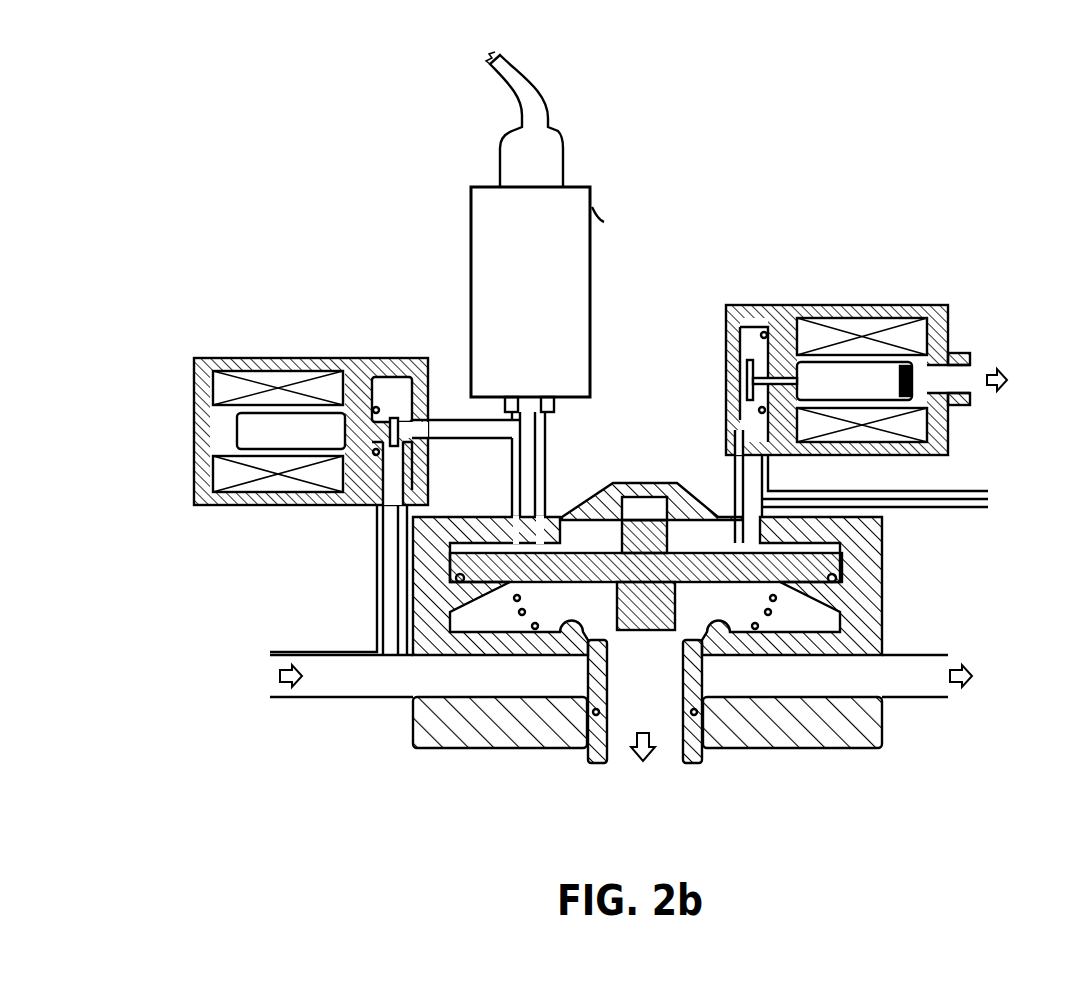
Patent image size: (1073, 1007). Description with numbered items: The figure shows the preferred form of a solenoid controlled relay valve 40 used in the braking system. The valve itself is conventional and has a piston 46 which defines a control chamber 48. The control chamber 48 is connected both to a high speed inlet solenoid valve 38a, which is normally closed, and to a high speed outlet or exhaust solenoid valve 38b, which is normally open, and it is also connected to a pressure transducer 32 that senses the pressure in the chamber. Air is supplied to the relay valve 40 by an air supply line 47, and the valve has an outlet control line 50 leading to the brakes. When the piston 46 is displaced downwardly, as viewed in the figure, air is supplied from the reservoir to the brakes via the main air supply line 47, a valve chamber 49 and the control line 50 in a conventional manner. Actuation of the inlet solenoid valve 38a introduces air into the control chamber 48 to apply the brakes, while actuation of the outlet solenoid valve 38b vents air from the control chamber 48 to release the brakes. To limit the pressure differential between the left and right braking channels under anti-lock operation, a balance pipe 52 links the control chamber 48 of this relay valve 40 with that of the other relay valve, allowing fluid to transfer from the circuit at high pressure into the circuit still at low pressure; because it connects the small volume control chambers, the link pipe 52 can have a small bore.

The pressure transducer 32 is at (568, 354).
The inlet solenoid valve 38a is at (200, 438).
The outlet solenoid valve 38b is at (756, 410).
The relay valve 40 is at (913, 598).
The piston 46 is at (882, 566).
The air supply line 47 is at (352, 698).
The control chamber 48 is at (580, 543).
The valve chamber 49 is at (882, 621).
The outlet control line 50 is at (920, 700).
The balance pipe 52 is at (932, 507).